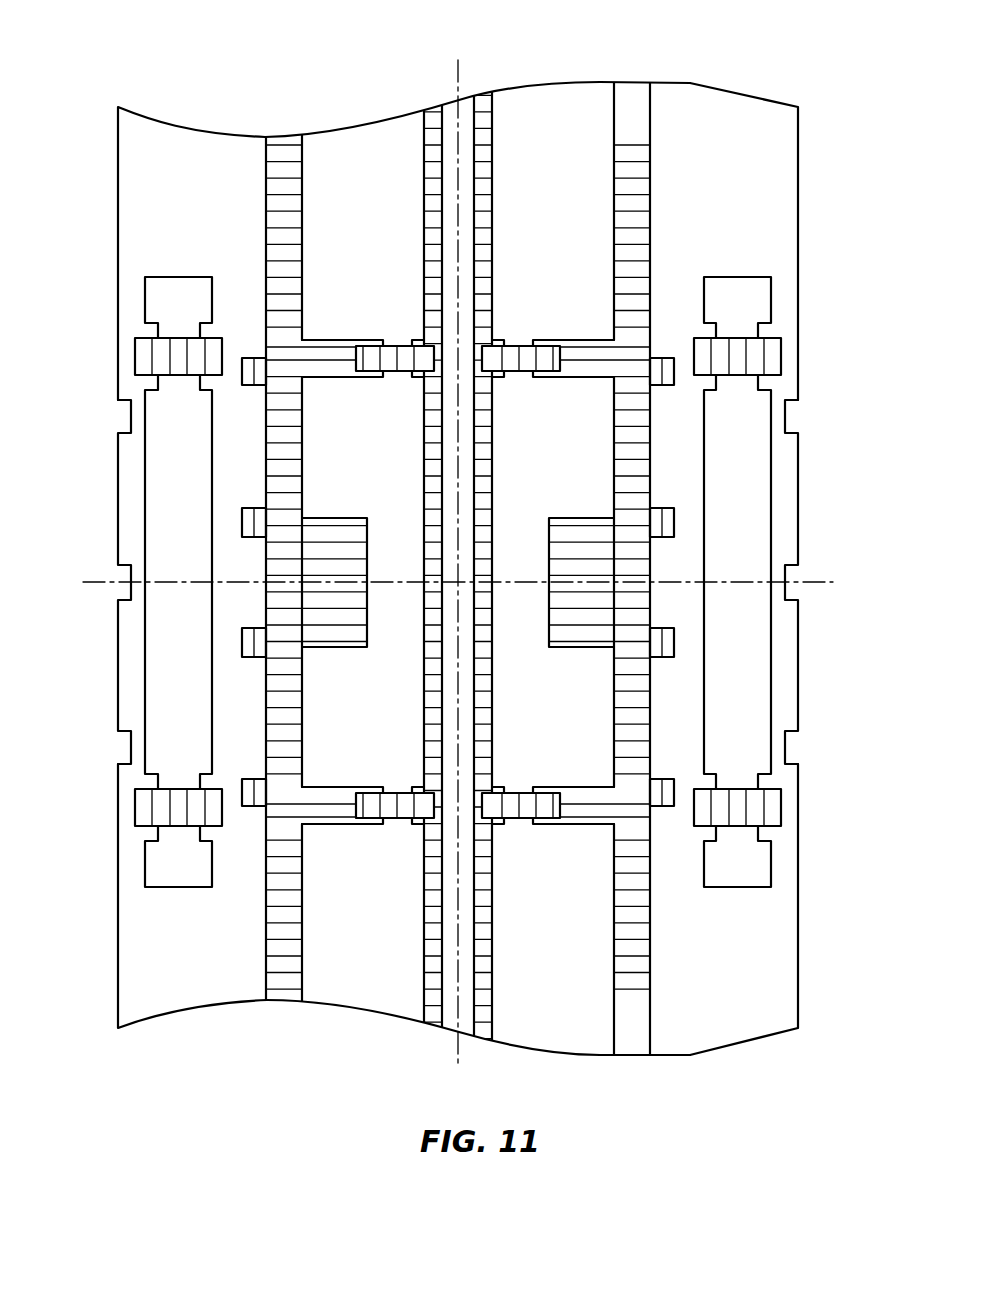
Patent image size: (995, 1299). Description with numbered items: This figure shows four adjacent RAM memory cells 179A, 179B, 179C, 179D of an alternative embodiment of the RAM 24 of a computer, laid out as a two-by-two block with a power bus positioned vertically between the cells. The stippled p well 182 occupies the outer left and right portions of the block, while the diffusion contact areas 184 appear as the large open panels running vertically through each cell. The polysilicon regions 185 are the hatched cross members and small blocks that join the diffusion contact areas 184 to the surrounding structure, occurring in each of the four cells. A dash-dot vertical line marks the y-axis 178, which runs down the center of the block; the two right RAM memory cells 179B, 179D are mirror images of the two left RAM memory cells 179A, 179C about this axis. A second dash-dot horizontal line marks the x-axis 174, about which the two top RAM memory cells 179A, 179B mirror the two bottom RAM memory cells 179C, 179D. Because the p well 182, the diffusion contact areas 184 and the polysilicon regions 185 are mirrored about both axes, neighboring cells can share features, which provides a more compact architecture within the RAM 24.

The RAM 24 is at (107, 591).
The x-axis 174 is at (815, 583).
The y-axis 178 is at (458, 76).
The RAM memory cell 179A is at (110, 96).
The RAM memory cell 179B is at (806, 96).
The RAM memory cell 179C is at (103, 988).
The RAM memory cell 179D is at (824, 999).
The p well 182 is at (213, 963).
The diffusion contact area 184 is at (199, 493).
The polysilicon region 185 is at (153, 356).